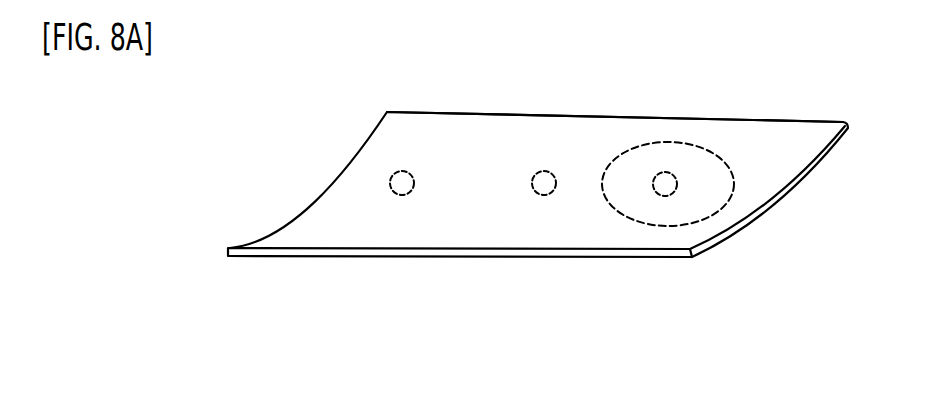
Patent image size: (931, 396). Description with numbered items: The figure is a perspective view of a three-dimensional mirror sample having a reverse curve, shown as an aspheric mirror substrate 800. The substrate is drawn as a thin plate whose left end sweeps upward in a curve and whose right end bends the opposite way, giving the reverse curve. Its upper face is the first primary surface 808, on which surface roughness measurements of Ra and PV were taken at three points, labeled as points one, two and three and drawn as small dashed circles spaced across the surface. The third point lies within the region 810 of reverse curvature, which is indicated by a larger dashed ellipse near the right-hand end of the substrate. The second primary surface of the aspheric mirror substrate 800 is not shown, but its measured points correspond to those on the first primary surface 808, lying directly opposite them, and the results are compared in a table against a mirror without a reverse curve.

The aspheric mirror substrate 800 is at (297, 138).
The first primary surface 808 is at (455, 123).
The region of reverse curvature 810 is at (658, 140).